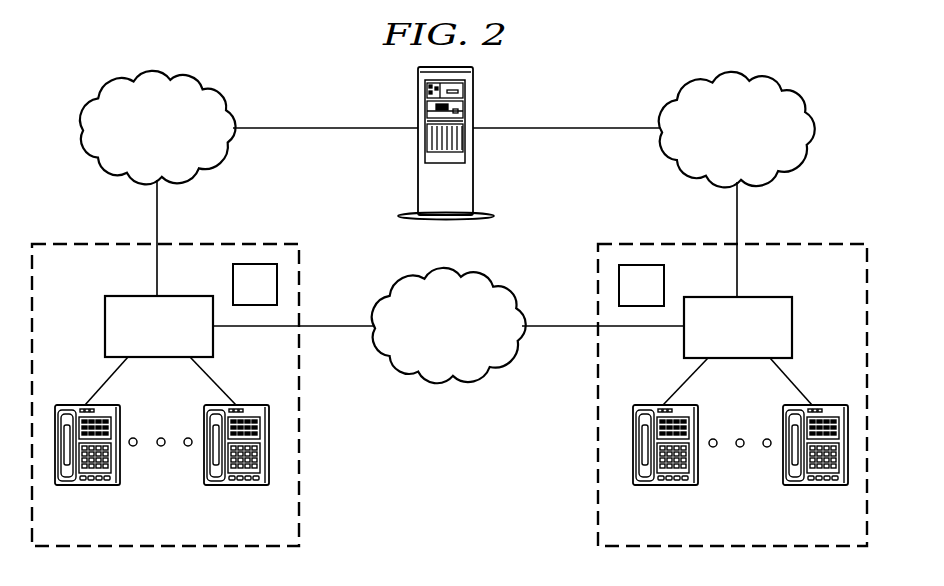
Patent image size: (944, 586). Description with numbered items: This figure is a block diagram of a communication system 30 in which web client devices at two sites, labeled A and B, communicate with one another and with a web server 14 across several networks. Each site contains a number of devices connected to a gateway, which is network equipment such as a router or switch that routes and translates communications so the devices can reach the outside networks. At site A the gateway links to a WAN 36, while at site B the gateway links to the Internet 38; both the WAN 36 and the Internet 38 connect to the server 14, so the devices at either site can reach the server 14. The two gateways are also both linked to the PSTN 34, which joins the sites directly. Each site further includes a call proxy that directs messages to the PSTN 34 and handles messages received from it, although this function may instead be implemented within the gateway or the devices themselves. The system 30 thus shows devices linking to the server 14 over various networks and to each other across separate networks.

The server 14 is at (418, 157).
The system 30 is at (510, 496).
The PSTN 34 is at (453, 378).
The WAN 36 is at (153, 76).
The Internet 38 is at (735, 78).